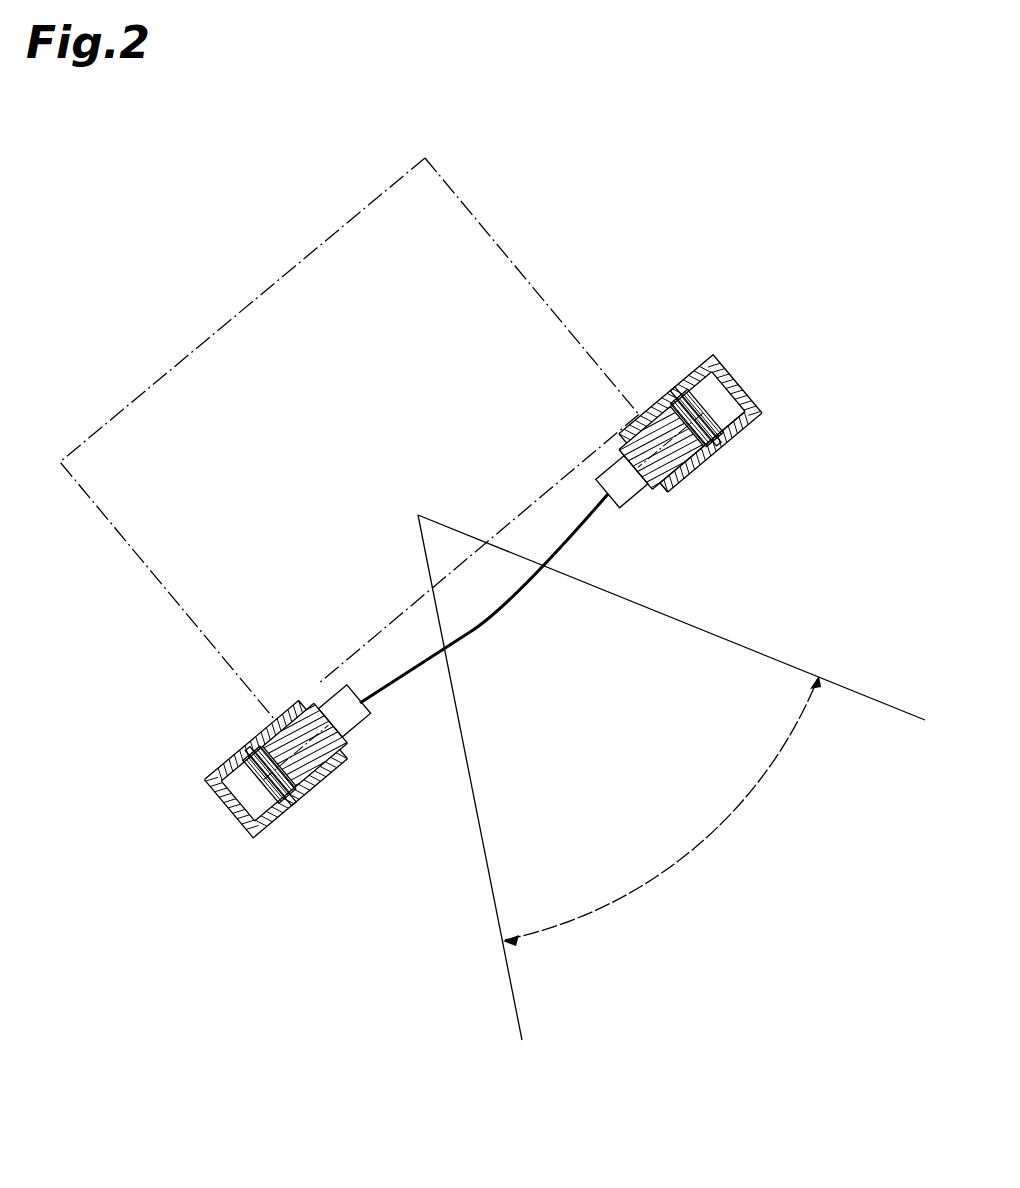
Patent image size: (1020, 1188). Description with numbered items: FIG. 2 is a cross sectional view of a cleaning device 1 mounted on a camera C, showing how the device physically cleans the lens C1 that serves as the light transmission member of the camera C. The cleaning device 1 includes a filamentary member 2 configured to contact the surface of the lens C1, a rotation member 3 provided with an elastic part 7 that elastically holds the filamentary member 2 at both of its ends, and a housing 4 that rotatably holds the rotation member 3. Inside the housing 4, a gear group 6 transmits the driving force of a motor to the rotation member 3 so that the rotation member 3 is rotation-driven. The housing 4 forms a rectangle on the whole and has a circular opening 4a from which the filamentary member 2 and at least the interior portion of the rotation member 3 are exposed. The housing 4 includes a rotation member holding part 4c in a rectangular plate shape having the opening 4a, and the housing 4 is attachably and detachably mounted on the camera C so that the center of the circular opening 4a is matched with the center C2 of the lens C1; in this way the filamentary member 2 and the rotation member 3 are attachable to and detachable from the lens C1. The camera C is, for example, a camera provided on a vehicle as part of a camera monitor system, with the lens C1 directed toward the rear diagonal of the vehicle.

The cleaning device 1 is at (798, 413).
The filamentary member 2 is at (493, 635).
The rotation member 3 is at (318, 752).
The housing 4 is at (741, 379).
The opening 4a is at (667, 492).
The rotation member holding part 4c is at (712, 436).
The gear group 6 is at (264, 789).
The elastic part 7 is at (350, 727).
The camera C is at (225, 660).
The lens C1 is at (378, 698).
The center C2 is at (502, 611).